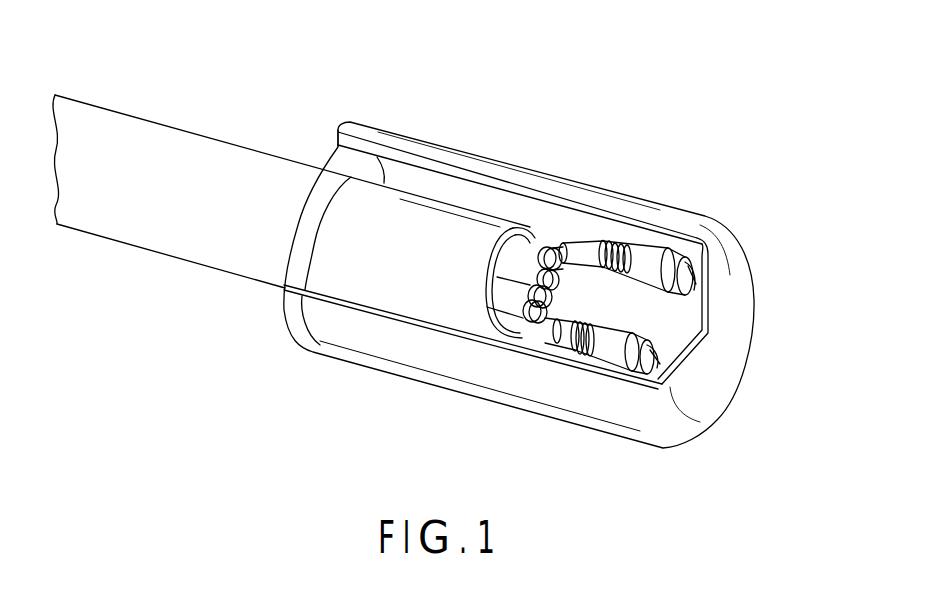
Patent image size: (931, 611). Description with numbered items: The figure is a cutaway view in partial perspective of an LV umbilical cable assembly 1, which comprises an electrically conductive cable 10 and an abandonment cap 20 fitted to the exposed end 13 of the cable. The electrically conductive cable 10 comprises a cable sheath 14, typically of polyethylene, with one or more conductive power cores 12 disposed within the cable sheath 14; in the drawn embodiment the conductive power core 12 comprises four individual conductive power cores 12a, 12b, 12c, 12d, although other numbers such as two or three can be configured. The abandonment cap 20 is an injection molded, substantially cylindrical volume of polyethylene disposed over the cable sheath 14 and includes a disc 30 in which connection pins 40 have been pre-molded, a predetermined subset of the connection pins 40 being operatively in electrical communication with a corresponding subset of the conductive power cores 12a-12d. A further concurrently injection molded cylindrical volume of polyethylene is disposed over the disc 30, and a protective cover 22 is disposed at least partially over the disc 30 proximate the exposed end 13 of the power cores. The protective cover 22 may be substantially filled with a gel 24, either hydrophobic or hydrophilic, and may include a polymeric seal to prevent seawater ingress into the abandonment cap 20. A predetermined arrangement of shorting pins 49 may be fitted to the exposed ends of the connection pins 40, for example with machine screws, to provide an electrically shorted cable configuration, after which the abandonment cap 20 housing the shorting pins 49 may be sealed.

The umbilical cable assembly 1 is at (234, 373).
The electrically conductive cable 10 is at (165, 88).
The conductive power core 12 is at (523, 250).
The conductive power core 12a is at (562, 270).
The conductive power core 12b is at (575, 288).
The conductive power core 12c is at (552, 305).
The conductive power core 12d is at (542, 312).
The exposed end 13 is at (542, 247).
The cable sheath 14 is at (223, 252).
The abandonment cap 20 is at (401, 182).
The protective cover 22 is at (660, 435).
The gel 24 is at (692, 342).
The disc 30 is at (578, 325).
The connection pins 40 is at (613, 355).
The shorting pins 49 is at (682, 255).